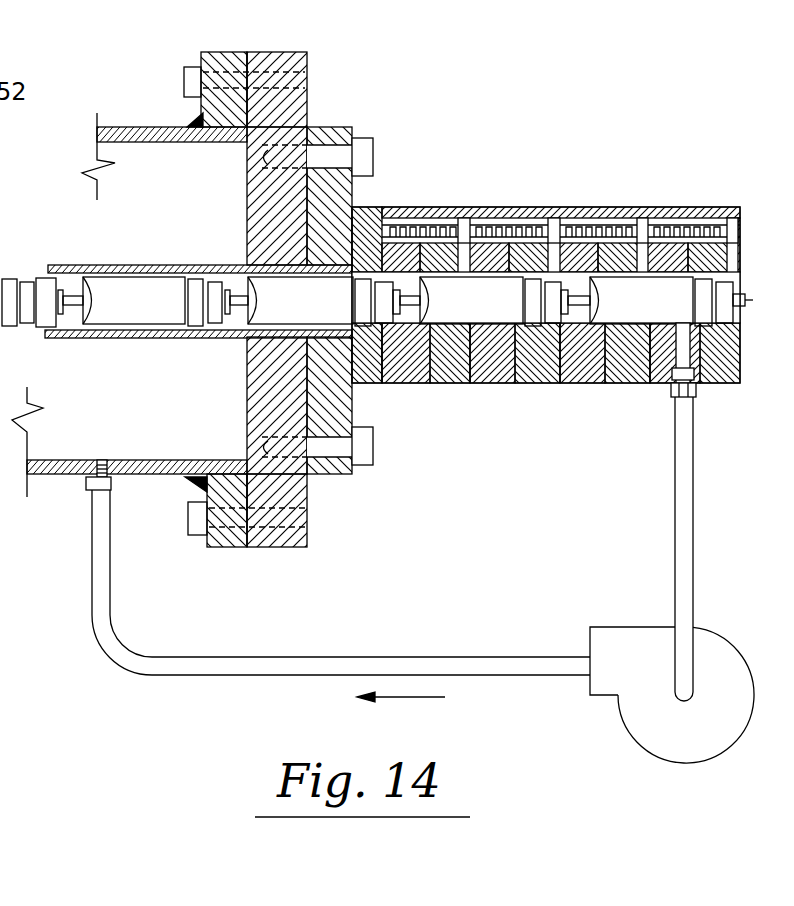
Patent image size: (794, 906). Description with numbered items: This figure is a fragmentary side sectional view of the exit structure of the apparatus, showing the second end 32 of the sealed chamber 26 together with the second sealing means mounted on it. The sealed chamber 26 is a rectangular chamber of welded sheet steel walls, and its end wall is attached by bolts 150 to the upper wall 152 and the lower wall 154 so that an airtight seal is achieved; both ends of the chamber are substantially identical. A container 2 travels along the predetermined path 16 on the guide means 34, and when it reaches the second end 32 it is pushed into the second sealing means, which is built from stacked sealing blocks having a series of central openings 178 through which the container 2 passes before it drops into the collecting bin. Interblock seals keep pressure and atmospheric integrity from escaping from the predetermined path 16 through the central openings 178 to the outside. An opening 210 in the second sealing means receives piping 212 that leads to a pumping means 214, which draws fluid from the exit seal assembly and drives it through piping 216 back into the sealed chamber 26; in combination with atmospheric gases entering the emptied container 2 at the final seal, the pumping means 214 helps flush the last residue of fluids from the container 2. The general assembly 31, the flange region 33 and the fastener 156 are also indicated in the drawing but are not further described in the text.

The container 2 is at (636, 288).
The predetermined path 16 is at (142, 350).
The sealed chamber 26 is at (290, 565).
The housing assembly 31 is at (567, 122).
The second end 32 is at (320, 106).
The flange joint 33 is at (277, 58).
The guide means 34 is at (125, 265).
The bolts 150 is at (184, 68).
The upper wall 152 is at (137, 127).
The lower wall 154 is at (42, 460).
The bolt 156 is at (365, 448).
The central openings 178 is at (405, 277).
The opening 210 is at (680, 392).
The piping 212 is at (678, 500).
The pumping means 214 is at (627, 633).
The piping 216 is at (302, 652).